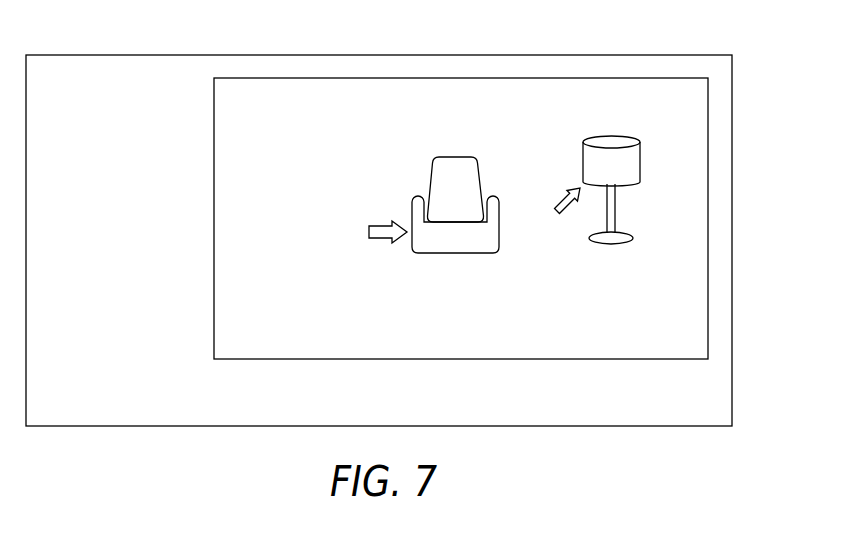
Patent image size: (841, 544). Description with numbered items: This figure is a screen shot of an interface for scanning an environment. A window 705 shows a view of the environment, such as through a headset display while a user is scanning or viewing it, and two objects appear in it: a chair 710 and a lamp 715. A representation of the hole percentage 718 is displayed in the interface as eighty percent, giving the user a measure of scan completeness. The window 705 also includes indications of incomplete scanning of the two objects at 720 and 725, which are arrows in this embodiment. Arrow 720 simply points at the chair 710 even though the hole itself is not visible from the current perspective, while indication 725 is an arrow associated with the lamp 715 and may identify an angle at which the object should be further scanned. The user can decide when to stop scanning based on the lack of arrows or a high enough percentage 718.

The window 705 is at (660, 77).
The chair 710 is at (454, 157).
The lamp 715 is at (628, 139).
The hole percentage representation 718 is at (117, 131).
The indication of incomplete scanning 720 is at (388, 240).
The indication of incomplete scanning 725 is at (557, 211).